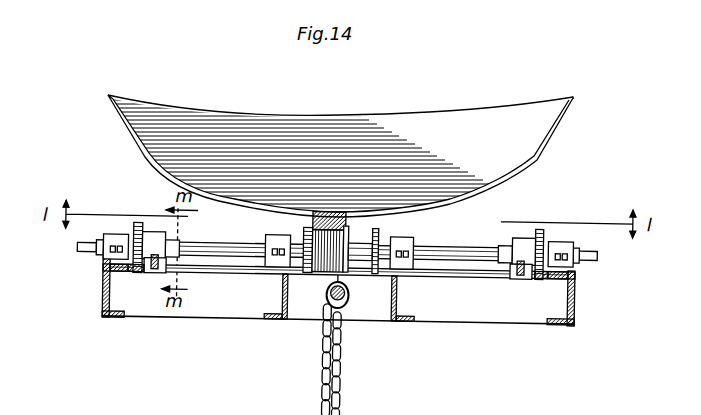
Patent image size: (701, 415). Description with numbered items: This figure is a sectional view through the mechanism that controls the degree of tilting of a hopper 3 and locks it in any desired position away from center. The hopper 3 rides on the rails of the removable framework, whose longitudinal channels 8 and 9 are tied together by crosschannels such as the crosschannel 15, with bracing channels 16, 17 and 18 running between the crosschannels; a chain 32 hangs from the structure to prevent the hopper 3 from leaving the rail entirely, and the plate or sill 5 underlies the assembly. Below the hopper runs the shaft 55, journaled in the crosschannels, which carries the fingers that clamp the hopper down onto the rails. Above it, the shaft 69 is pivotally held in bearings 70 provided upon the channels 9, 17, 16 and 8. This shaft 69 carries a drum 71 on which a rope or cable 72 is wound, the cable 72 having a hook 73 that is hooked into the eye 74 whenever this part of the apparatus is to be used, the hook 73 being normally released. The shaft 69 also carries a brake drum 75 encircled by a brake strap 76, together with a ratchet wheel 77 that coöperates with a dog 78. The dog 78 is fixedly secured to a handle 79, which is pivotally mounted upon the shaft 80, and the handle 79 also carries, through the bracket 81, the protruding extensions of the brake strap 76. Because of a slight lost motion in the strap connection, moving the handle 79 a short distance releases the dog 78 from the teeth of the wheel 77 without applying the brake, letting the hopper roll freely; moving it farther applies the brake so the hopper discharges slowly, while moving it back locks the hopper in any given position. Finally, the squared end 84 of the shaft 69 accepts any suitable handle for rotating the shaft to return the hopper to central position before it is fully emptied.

The hopper 3 is at (557, 124).
The base plate 5 is at (535, 322).
The channel 8 is at (572, 300).
The channel 9 is at (103, 310).
The crosschannel 15 is at (510, 244).
The bracing channel 16 is at (396, 320).
The bracing channel 17 is at (285, 320).
The bracing channel 18 is at (138, 276).
The chain 32 is at (345, 398).
The shaft 55 is at (347, 296).
The shaft 69 is at (443, 256).
The bearing 70 is at (116, 238).
The drum 71 is at (362, 247).
The rope or cable 72 is at (310, 228).
The hook 73 is at (346, 226).
The eye 74 is at (375, 228).
The brake drum 75 is at (168, 246).
The brake strap 76 is at (153, 235).
The ratchet wheel 77 is at (138, 226).
The dog 78 is at (540, 278).
The handle 79 is at (153, 273).
The shaft 80 is at (460, 276).
The bracket 81 is at (158, 278).
The squared end 84 is at (86, 254).